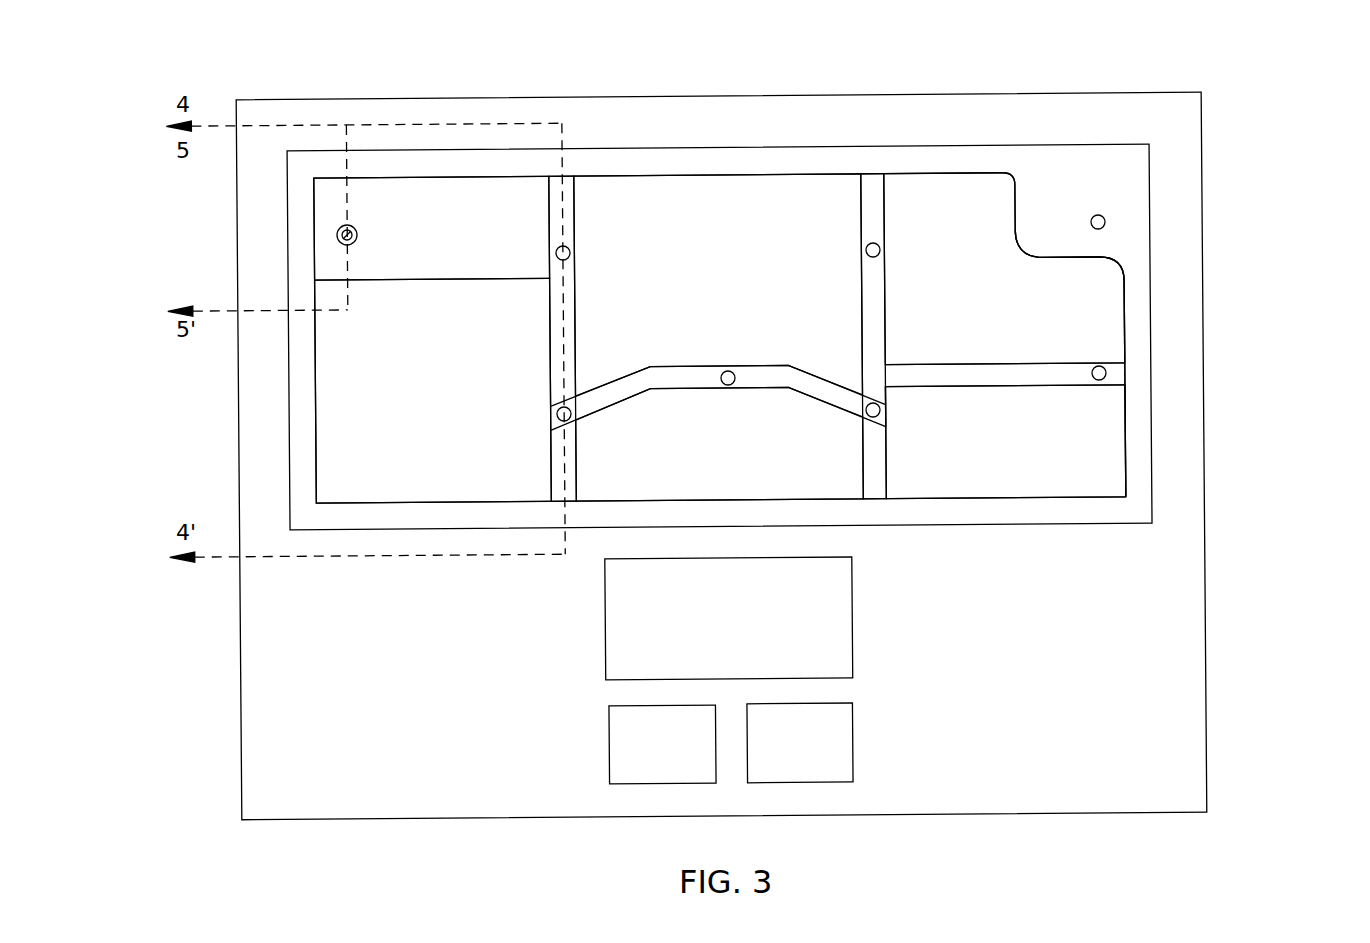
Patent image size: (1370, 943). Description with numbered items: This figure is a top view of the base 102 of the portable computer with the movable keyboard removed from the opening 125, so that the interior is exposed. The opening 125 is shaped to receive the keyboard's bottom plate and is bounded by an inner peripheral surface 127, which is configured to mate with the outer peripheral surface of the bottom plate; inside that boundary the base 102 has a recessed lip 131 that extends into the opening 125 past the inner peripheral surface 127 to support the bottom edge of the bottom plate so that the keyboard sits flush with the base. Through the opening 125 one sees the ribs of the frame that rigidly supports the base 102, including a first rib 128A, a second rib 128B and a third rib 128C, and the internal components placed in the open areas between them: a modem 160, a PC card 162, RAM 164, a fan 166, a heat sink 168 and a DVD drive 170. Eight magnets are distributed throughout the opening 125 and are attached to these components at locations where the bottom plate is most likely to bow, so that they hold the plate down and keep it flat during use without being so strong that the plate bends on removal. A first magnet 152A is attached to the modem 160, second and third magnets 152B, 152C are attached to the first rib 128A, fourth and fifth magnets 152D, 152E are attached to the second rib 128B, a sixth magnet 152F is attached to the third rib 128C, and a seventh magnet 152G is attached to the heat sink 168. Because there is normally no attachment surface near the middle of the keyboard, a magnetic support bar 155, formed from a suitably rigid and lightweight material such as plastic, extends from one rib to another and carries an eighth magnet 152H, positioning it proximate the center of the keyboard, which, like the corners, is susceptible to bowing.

The base 102 is at (1207, 639).
The opening 125 is at (776, 198).
The inner peripheral surface 127 is at (1151, 470).
The recessed lip 131 is at (1138, 425).
The first rib 128A is at (577, 183).
The second rib 128B is at (887, 215).
The third rib 128C is at (1030, 362).
The first magnet 152A is at (338, 228).
The second magnet 152B is at (570, 248).
The third magnet 152C is at (557, 410).
The fourth magnet 152D is at (867, 245).
The fifth magnet 152E is at (895, 387).
The sixth magnet 152F is at (1104, 367).
The seventh magnet 152G is at (1103, 215).
The eighth magnet 152H is at (727, 371).
The magnetic support bar 155 is at (753, 367).
The modem 160 is at (413, 240).
The PC card 162 is at (415, 436).
The RAM 164 is at (709, 461).
The fan 166 is at (776, 304).
The heat sink 168 is at (984, 311).
The DVD drive 170 is at (994, 457).